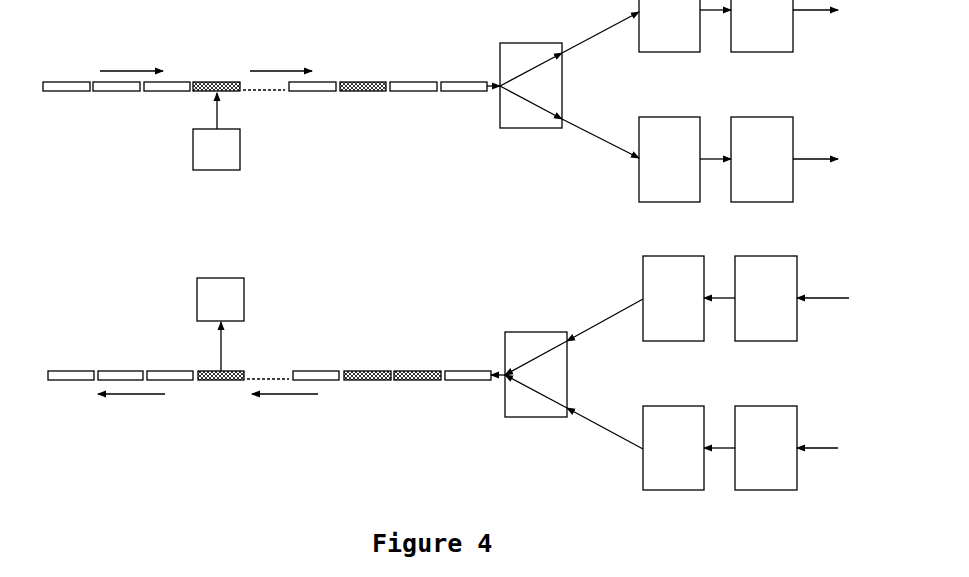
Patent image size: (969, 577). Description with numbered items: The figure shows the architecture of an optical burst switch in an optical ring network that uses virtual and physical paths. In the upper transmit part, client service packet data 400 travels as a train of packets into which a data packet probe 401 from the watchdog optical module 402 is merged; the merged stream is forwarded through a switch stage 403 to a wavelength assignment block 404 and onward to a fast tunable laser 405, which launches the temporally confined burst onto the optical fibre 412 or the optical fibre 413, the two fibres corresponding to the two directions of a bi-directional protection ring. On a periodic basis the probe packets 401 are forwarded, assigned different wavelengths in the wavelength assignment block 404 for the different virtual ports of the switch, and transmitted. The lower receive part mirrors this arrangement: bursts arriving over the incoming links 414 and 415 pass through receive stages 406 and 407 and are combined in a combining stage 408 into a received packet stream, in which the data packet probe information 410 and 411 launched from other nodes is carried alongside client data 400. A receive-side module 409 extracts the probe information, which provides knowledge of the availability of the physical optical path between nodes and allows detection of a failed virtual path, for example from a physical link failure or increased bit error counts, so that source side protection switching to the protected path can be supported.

The client service packet data 400 is at (68, 80).
The data packet probe 401 is at (217, 80).
The optical module 402 is at (215, 173).
The splitter 403 is at (531, 42).
The wavelength assignment block 404 is at (670, 54).
The fast tunable laser 405 is at (760, 54).
The input processing unit 406 is at (765, 343).
The transmit buffer 407 is at (675, 343).
The combiner 408 is at (535, 420).
The marker removal unit 409 is at (218, 277).
The data packet probe information 410 is at (220, 382).
The data packet probe information 411 is at (417, 382).
The optical fibre 412 is at (820, 12).
The optical fibre 413 is at (820, 162).
The input link 414 is at (818, 300).
The input link 415 is at (822, 450).